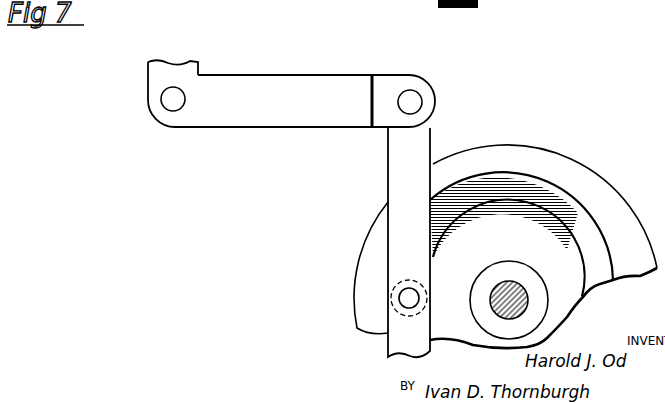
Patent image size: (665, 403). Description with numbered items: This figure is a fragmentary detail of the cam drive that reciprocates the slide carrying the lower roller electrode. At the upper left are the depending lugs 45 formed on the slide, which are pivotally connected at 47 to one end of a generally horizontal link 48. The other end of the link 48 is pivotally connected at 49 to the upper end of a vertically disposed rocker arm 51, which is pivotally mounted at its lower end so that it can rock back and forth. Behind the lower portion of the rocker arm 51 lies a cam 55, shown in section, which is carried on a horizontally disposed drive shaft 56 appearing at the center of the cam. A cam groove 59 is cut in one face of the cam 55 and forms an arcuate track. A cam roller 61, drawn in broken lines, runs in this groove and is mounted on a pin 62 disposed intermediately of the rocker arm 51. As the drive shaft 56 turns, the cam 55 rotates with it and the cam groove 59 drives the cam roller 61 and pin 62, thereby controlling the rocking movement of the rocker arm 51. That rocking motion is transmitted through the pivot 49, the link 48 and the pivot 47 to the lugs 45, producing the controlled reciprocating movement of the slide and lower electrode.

The depending lugs 45 is at (158, 77).
The pivotal connection 47 is at (170, 105).
The link 48 is at (305, 101).
The pivotal connection 49 is at (418, 97).
The rocker arm 51 is at (395, 158).
The cam 55 is at (582, 172).
The drive shaft 56 is at (520, 292).
The cam groove 59 is at (586, 216).
The cam roller 61 is at (418, 312).
The pin 62 is at (400, 297).